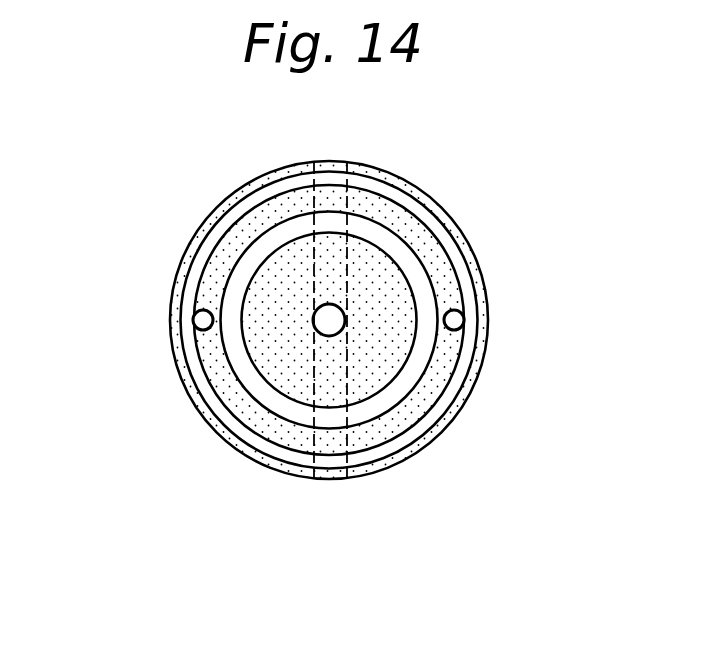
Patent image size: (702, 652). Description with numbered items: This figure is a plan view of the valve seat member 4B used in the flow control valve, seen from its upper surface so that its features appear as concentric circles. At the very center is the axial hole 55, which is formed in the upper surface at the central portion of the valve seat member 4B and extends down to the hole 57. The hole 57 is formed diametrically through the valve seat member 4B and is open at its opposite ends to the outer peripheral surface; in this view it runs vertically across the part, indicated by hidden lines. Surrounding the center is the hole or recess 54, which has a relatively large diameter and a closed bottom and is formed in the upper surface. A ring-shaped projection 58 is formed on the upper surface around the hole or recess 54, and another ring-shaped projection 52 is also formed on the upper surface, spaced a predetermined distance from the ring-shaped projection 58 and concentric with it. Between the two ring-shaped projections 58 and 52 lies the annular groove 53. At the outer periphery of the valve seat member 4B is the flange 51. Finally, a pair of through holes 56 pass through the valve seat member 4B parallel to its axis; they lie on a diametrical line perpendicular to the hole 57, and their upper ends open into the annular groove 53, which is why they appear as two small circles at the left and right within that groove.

The valve seat member 4B is at (347, 325).
The flange 51 is at (475, 257).
The ring-shaped projection 52 is at (428, 217).
The annular groove 53 is at (397, 177).
The hole or recess 54 is at (395, 398).
The hole 55 is at (392, 362).
The through holes 56 is at (203, 320).
The hole 57 is at (328, 458).
The ring-shaped projection 58 is at (345, 318).